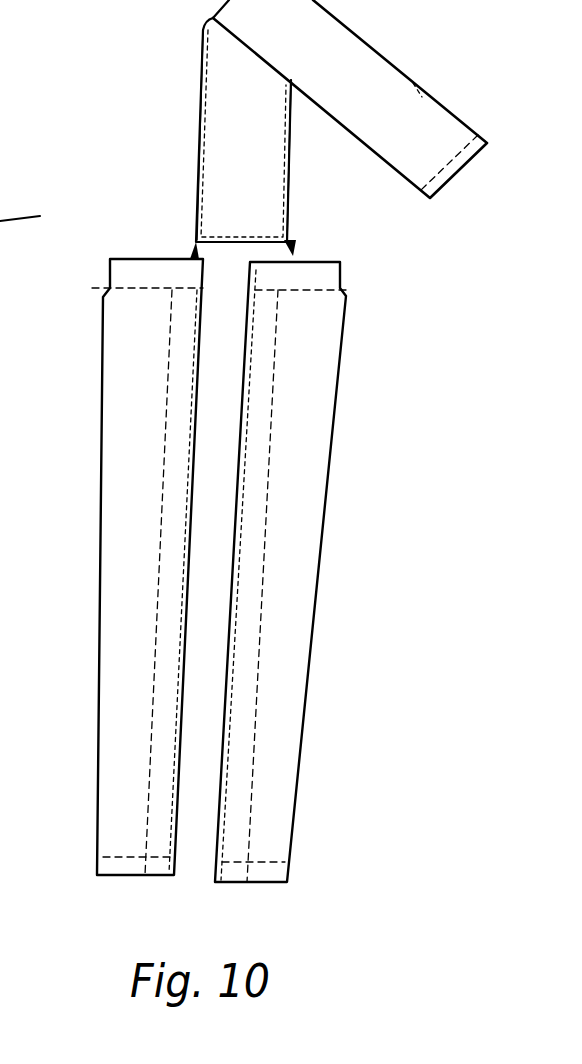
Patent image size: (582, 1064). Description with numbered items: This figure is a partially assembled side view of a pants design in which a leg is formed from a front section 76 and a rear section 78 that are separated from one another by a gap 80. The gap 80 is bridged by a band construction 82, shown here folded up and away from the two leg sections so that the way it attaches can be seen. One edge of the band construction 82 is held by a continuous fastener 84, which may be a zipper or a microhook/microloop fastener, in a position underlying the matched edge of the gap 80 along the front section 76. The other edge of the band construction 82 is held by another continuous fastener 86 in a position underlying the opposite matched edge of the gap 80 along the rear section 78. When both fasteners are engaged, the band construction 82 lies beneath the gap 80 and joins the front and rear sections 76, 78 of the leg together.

The front section 76 is at (118, 745).
The rear section 78 is at (279, 776).
The gap 80 is at (230, 622).
The band construction 82 is at (220, 125).
The continuous fastener 84 is at (198, 185).
The continuous fastener 86 is at (290, 183).